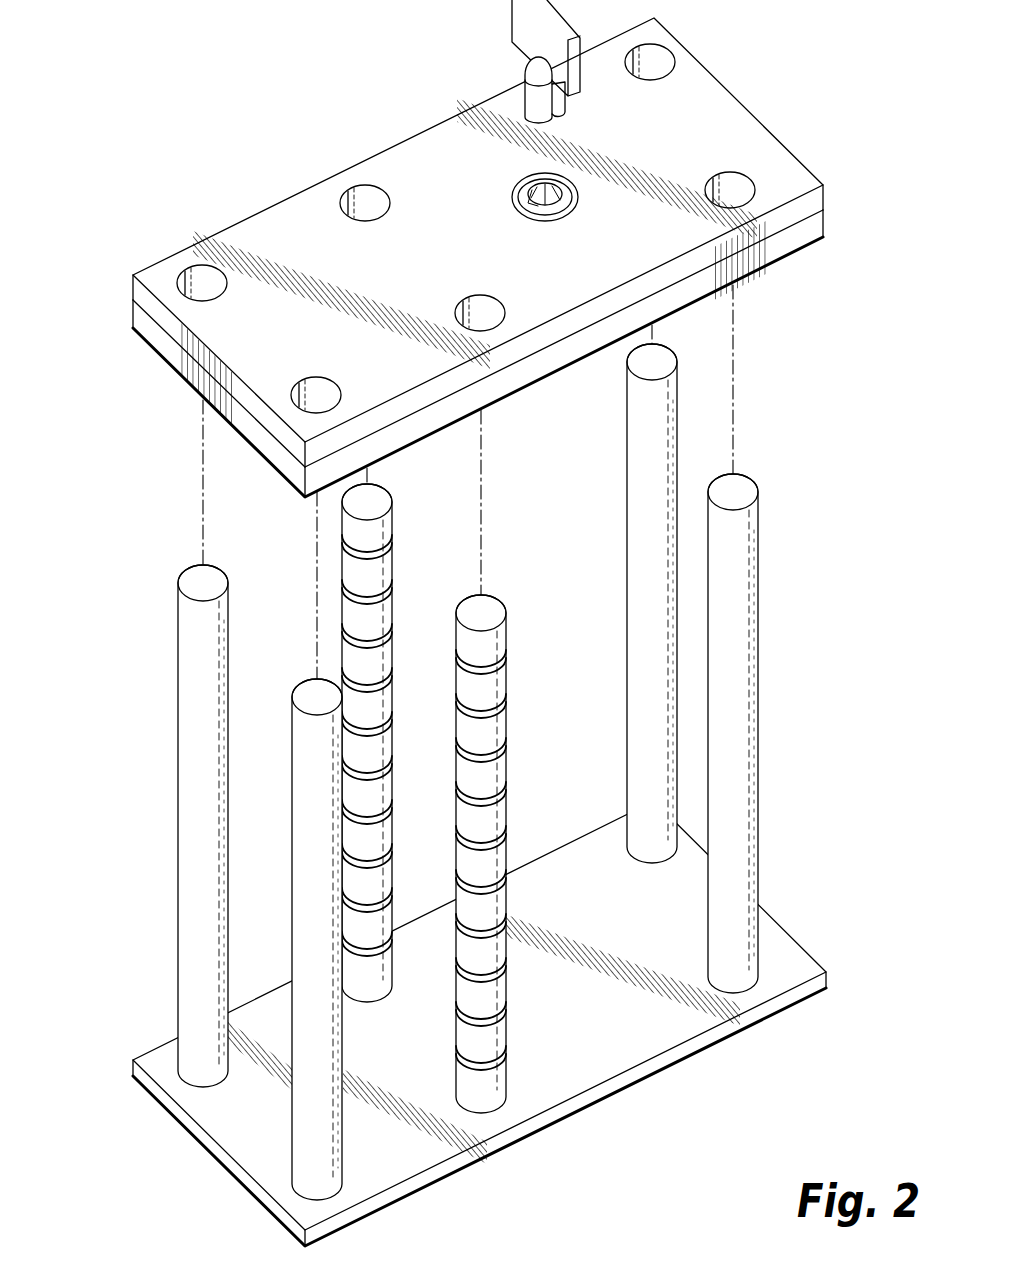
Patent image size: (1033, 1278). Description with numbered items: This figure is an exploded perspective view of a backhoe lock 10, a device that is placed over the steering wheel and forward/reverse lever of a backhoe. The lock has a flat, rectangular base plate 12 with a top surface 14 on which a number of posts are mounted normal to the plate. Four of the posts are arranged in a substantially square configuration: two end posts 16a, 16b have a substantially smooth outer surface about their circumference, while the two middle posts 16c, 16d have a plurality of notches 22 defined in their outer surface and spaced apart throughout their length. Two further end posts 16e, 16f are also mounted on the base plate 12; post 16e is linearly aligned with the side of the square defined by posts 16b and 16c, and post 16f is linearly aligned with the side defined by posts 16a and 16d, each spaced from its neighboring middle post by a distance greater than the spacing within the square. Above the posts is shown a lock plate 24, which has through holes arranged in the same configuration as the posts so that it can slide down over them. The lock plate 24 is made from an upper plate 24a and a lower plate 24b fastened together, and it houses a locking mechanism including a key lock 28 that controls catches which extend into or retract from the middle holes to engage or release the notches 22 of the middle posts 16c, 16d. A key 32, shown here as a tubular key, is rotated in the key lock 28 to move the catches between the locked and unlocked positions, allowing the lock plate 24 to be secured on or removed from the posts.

The backhoe lock 10 is at (563, 1152).
The base plate 12 is at (479, 1023).
The top surface 14 is at (595, 1027).
The end post 16a is at (177, 829).
The end post 16b is at (298, 1130).
The middle post 16c is at (535, 854).
The middle post 16d is at (341, 541).
The end post 16e is at (759, 738).
The end post 16f is at (626, 436).
The notches 22 is at (507, 784).
The lock plate 24 is at (425, 257).
The upper plate 24a is at (156, 312).
The lower plate 24b is at (180, 357).
The key lock 28 is at (513, 198).
The key 32 is at (511, 16).